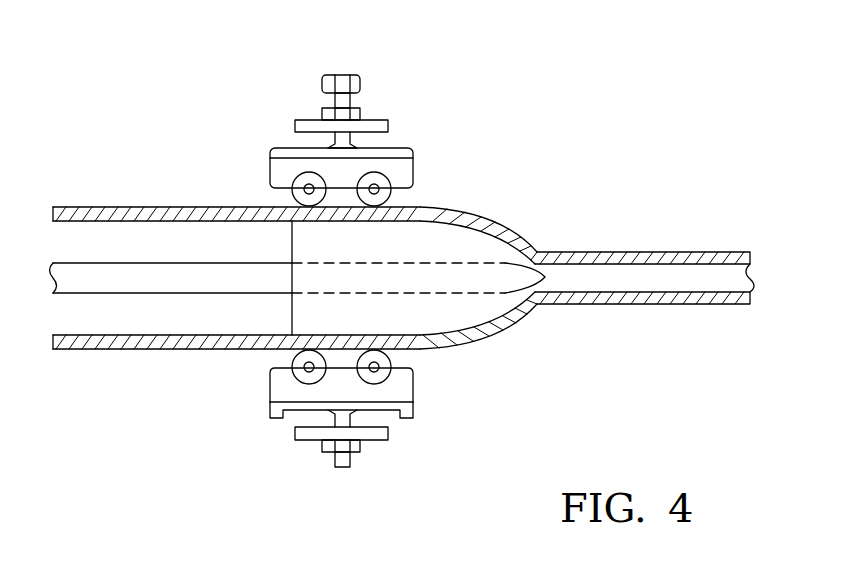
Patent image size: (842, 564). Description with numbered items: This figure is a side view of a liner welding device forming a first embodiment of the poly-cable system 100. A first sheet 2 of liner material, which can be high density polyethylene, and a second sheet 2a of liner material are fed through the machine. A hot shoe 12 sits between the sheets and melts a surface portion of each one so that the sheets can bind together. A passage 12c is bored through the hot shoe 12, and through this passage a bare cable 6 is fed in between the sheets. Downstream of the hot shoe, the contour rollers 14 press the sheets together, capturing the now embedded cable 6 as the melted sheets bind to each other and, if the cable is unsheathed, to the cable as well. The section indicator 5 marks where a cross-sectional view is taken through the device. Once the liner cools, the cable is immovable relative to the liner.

The poly-cable system 100 is at (613, 110).
The section line 5- 5 is at (162, 505).
The first sheet 2 is at (478, 222).
The second sheet 2a is at (488, 330).
The bare cable 6 is at (88, 293).
The hot shoe 12 is at (417, 238).
The passage 12c is at (437, 293).
The contour rollers 14 is at (403, 150).